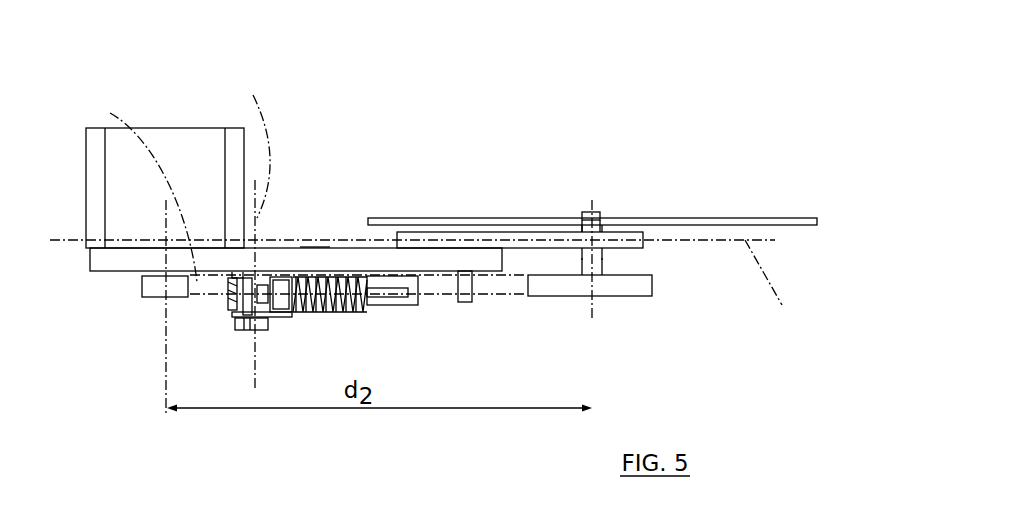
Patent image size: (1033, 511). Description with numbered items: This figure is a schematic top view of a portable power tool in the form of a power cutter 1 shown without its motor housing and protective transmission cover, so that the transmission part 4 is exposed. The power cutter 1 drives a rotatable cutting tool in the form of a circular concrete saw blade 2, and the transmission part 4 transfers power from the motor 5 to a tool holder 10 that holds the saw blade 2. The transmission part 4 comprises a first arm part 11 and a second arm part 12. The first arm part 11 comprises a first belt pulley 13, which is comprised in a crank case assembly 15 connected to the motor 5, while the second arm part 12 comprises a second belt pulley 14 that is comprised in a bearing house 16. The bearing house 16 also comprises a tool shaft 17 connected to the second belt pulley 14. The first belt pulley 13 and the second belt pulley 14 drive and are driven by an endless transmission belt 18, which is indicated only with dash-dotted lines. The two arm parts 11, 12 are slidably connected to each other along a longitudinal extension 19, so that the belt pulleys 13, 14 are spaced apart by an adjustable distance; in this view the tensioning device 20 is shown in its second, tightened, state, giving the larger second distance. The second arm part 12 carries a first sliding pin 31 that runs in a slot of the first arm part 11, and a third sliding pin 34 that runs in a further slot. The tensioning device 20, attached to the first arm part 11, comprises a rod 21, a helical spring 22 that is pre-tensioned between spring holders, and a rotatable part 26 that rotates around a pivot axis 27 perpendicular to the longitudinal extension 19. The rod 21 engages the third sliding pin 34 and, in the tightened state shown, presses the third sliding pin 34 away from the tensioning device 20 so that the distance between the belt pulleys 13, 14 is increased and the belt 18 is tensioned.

The power cutter 1 is at (202, 52).
The saw blade 2 is at (712, 223).
The transmission part 4 is at (300, 237).
The motor 5 is at (193, 158).
The tool holder 10 is at (614, 203).
The first arm part 11 is at (338, 262).
The second arm part 12 is at (570, 235).
The first belt pulley 13 is at (162, 285).
The second belt pulley 14 is at (610, 285).
The crank case assembly 15 is at (129, 277).
The bearing house 16 is at (611, 231).
The tool shaft 17 is at (595, 259).
The endless transmission belt 18 is at (136, 189).
The longitudinal extension 19 is at (778, 280).
The tensioning device 20 is at (290, 322).
The rod 21 is at (392, 288).
The helical spring 22 is at (343, 273).
The rotatable part 26 is at (245, 322).
The pivot axis 27 is at (246, 147).
The first sliding pin 31 is at (465, 297).
The third sliding pin 34 is at (413, 287).